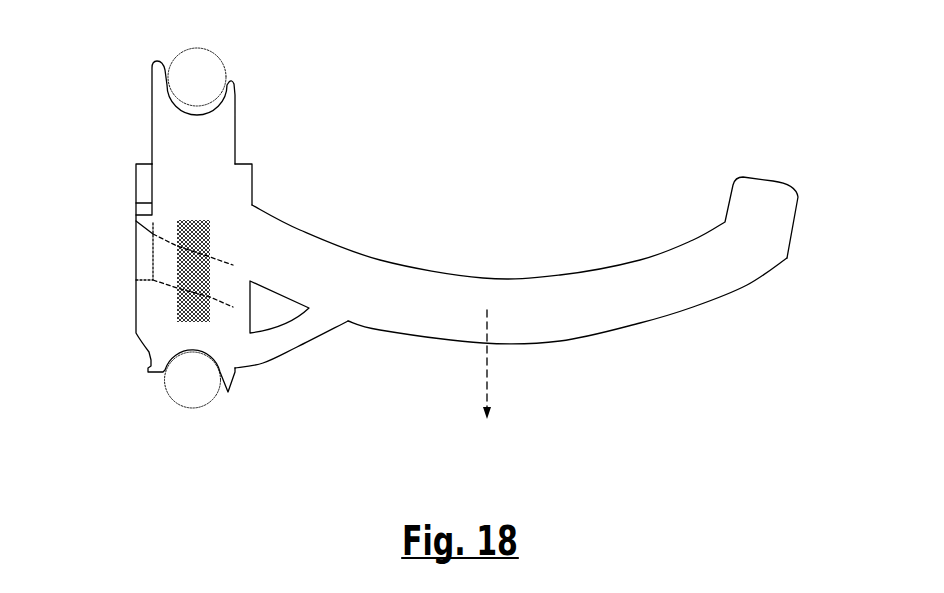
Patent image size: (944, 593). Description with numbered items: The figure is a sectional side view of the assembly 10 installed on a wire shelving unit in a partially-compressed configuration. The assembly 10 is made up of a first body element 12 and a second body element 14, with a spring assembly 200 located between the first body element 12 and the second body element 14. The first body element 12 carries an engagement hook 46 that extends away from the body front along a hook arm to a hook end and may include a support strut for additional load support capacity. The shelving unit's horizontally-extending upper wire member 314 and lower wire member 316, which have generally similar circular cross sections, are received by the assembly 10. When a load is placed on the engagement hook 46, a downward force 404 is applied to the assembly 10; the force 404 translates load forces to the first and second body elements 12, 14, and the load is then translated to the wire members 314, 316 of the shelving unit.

The assembly 10 is at (414, 230).
The first body element 12 is at (189, 311).
The second body element 14 is at (149, 83).
The engagement hook 46 is at (525, 296).
The spring assembly 200 is at (175, 267).
The upper wire member 314 is at (195, 70).
The lower wire member 316 is at (192, 387).
The downward force 404 is at (487, 367).